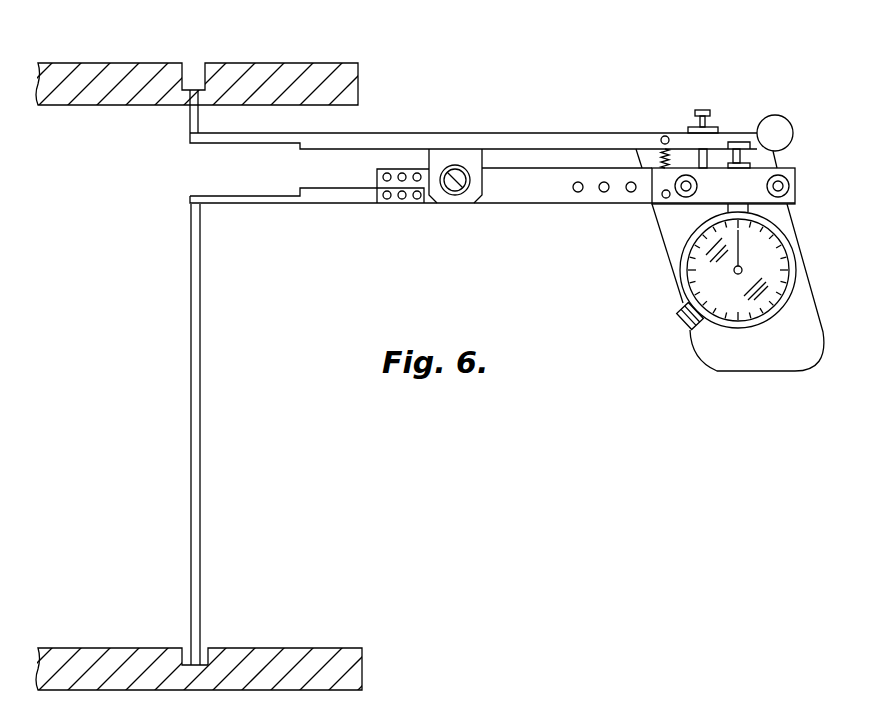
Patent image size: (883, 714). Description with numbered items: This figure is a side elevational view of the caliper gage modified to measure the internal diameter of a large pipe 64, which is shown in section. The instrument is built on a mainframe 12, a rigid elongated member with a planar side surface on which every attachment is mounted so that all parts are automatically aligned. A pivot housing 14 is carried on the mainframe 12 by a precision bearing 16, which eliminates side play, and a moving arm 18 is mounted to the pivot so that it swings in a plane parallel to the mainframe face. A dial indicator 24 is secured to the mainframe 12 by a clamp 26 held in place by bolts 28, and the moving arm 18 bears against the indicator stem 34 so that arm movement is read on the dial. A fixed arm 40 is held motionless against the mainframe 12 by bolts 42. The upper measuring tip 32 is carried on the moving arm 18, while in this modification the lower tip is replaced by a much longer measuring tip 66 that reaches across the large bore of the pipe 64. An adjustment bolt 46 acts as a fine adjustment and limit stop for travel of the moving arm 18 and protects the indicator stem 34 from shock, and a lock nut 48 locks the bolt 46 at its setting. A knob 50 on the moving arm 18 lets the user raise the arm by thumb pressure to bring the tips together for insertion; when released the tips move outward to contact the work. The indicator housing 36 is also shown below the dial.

The mainframe 12 is at (528, 203).
The pivot housing 14 is at (483, 187).
The precision bearing 16 is at (452, 195).
The moving arm 18 is at (493, 133).
The dial indicator 24 is at (795, 295).
The clamp 26 is at (795, 172).
The bolts 28 is at (790, 191).
The upper measuring tip 32 is at (190, 121).
The indicator stem 34 is at (732, 143).
The indicator housing 36 is at (822, 355).
The fixed arm 40 is at (258, 205).
The bolts 42 is at (388, 203).
The adjustment bolt 46 is at (698, 150).
The lock nut 48 is at (696, 127).
The knob 50 is at (790, 118).
The pipe 64 is at (243, 63).
The measuring tip 66 is at (201, 452).